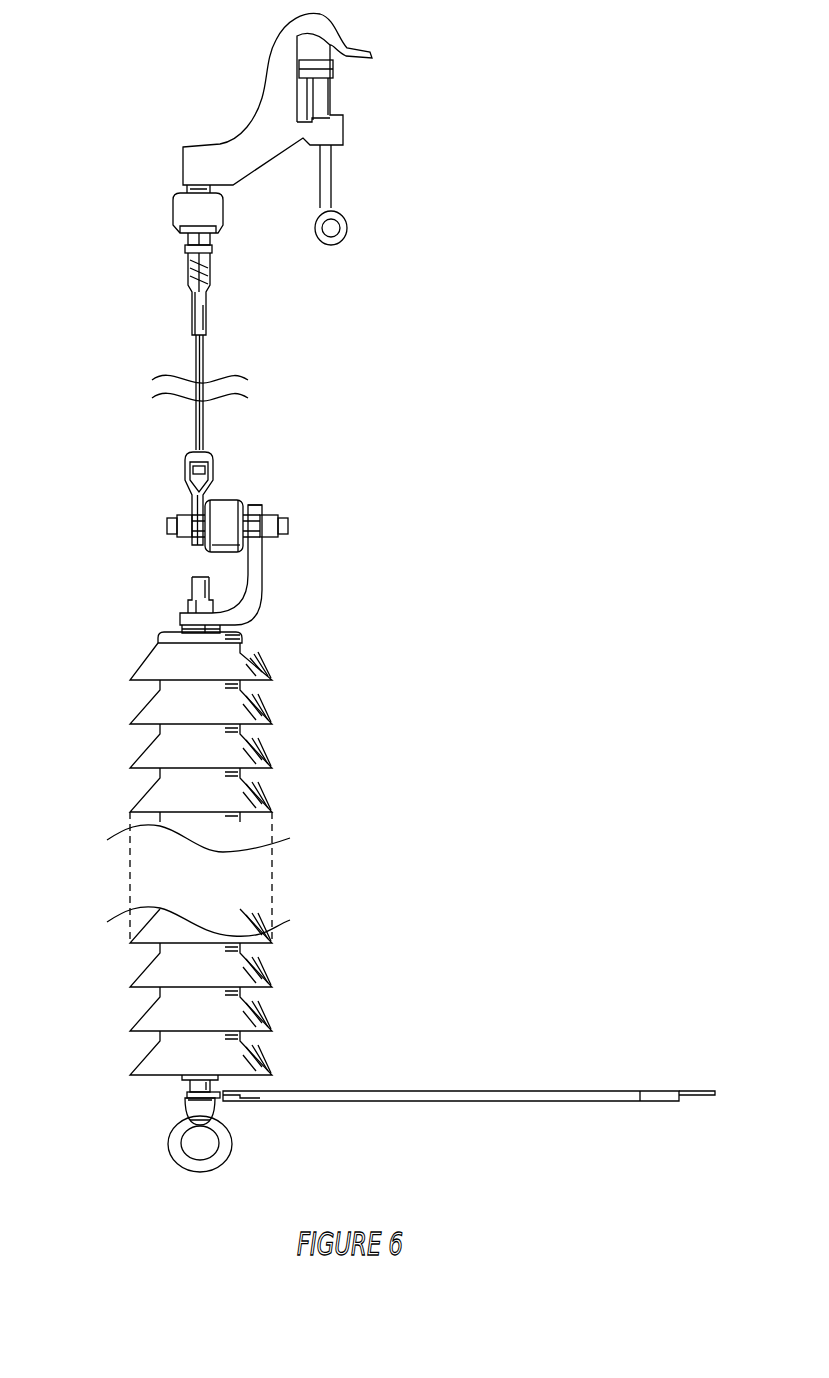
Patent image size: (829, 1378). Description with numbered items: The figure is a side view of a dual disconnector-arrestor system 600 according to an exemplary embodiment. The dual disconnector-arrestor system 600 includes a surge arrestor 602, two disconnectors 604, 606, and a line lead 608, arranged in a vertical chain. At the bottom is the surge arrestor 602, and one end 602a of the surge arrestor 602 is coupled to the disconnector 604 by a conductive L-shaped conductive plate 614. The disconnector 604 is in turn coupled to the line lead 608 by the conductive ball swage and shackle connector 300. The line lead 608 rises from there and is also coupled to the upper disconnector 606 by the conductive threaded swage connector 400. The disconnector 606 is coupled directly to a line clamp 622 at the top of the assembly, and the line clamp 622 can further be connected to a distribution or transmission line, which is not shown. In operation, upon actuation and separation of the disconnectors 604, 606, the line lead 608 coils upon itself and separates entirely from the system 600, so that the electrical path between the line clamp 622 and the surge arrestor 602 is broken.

The dual disconnector-arrestor system 600 is at (557, 60).
The line clamp 622 is at (264, 121).
The disconnector 606 is at (189, 214).
The conductive threaded swage connector 400 is at (190, 269).
The line lead 608 is at (194, 362).
The conductive ball swage and shackle connector 300 is at (186, 465).
The disconnector 604 is at (232, 500).
The L-shaped conductive plate 614 is at (266, 573).
The end of the surge arrestor 602a is at (160, 641).
The surge arrestor 602 is at (134, 763).